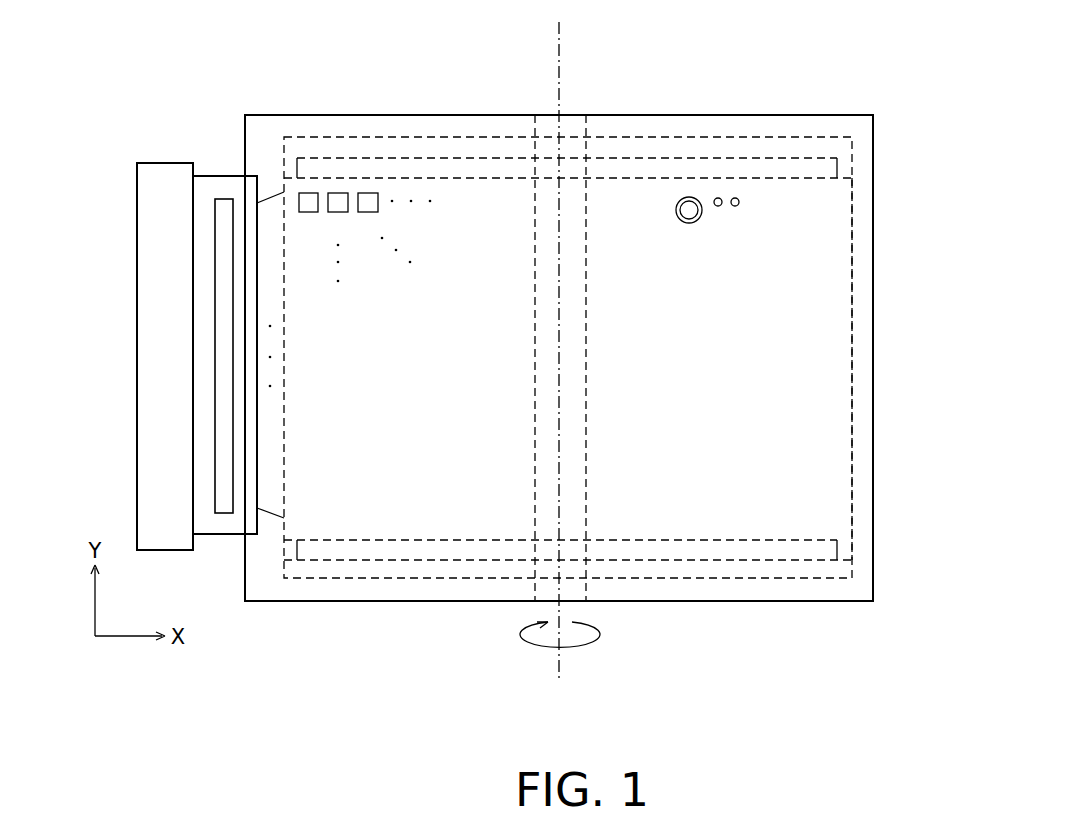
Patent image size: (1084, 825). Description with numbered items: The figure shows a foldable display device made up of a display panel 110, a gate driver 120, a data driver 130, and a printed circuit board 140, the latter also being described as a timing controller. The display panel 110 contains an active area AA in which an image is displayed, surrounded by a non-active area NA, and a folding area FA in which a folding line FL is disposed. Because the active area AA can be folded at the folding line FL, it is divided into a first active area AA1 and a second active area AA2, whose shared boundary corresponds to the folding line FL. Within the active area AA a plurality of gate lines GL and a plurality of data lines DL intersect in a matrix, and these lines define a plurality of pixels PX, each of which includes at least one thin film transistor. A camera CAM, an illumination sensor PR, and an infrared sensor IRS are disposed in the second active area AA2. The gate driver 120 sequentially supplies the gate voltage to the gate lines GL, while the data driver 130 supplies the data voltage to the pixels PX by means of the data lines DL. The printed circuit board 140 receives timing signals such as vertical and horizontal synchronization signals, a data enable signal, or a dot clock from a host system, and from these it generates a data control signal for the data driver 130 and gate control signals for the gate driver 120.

The display panel 110 is at (858, 115).
The gate driver 120 is at (853, 137).
The data driver 130 is at (215, 382).
The printed circuit board 140 is at (137, 462).
The pixels PX is at (308, 193).
The folding line FL is at (560, 340).
The folding area FA is at (578, 115).
The first active area AA1 is at (496, 205).
The second active area AA2 is at (631, 205).
The active area AA is at (567, 445).
The camera CAM is at (688, 197).
The illumination sensor PR is at (718, 198).
The infrared sensor IRS is at (735, 198).
The gate lines GL is at (837, 165).
The data lines DL is at (273, 517).
The non-active area NA is at (862, 500).